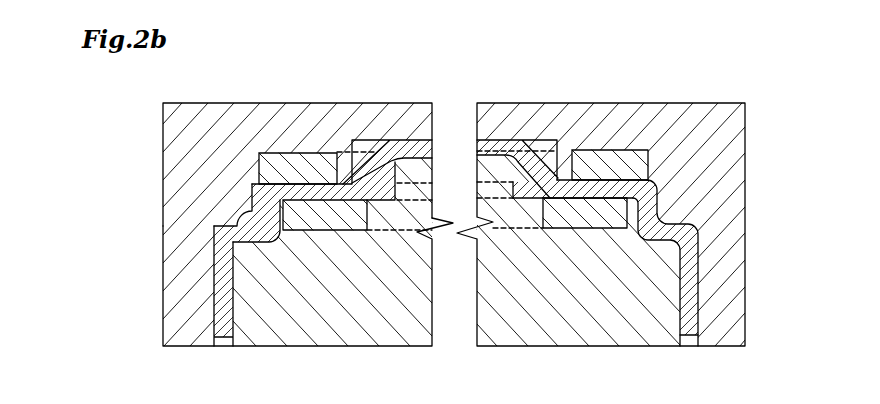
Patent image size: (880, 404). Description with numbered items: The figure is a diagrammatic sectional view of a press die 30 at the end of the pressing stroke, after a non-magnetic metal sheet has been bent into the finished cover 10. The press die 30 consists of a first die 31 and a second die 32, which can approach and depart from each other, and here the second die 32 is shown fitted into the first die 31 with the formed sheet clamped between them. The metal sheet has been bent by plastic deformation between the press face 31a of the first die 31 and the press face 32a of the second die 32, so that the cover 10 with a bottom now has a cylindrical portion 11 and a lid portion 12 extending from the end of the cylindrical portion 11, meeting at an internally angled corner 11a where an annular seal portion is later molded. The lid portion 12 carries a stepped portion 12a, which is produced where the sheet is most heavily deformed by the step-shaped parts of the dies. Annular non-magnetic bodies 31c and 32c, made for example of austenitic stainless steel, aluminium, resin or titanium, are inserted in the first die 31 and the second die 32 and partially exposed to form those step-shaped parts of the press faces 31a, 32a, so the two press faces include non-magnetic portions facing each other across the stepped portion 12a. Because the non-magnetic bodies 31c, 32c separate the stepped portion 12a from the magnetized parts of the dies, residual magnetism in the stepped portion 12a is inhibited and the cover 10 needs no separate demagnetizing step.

The cover 10 is at (663, 216).
The cylindrical portion 11 is at (687, 317).
The corner 11a is at (247, 226).
The lid portion 12 is at (583, 140).
The stepped portion 12a is at (613, 180).
The press die 30 is at (62, 243).
The first die 31 is at (183, 242).
The press face 31a is at (385, 153).
The non-magnetic body 31c is at (295, 155).
The second die 32 is at (250, 320).
The press face 32a is at (501, 150).
The non-magnetic body 32c is at (307, 223).